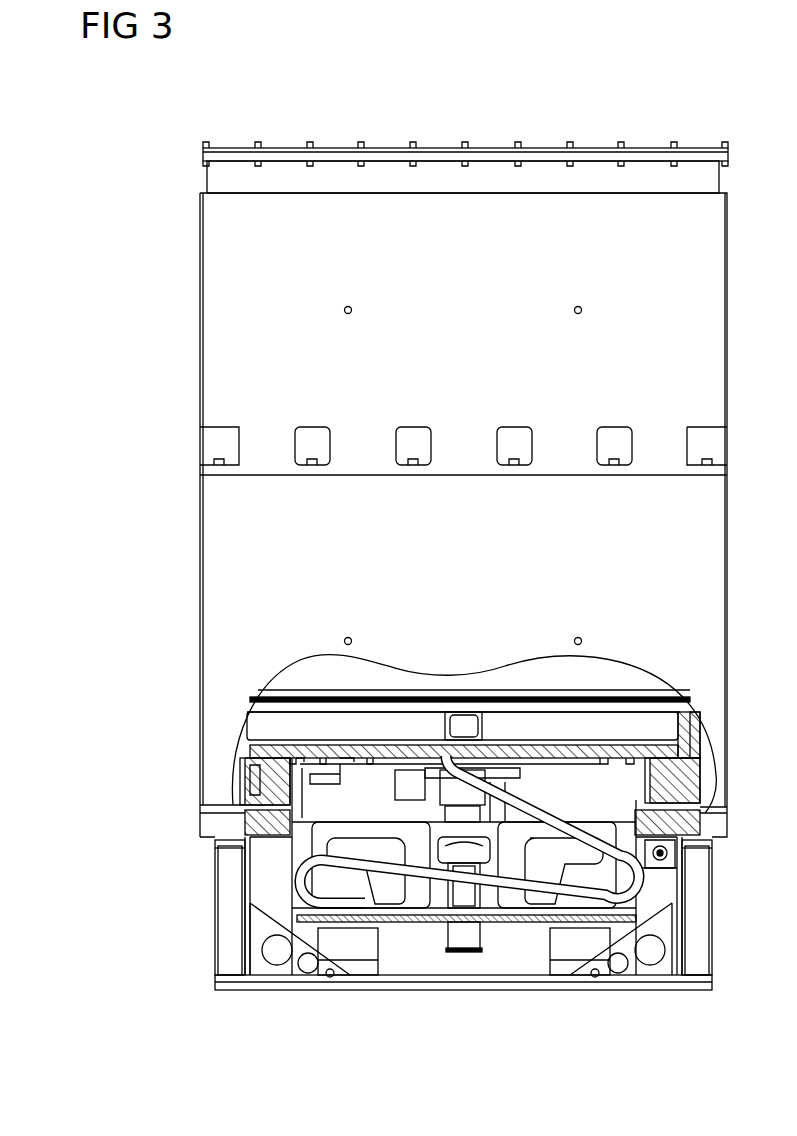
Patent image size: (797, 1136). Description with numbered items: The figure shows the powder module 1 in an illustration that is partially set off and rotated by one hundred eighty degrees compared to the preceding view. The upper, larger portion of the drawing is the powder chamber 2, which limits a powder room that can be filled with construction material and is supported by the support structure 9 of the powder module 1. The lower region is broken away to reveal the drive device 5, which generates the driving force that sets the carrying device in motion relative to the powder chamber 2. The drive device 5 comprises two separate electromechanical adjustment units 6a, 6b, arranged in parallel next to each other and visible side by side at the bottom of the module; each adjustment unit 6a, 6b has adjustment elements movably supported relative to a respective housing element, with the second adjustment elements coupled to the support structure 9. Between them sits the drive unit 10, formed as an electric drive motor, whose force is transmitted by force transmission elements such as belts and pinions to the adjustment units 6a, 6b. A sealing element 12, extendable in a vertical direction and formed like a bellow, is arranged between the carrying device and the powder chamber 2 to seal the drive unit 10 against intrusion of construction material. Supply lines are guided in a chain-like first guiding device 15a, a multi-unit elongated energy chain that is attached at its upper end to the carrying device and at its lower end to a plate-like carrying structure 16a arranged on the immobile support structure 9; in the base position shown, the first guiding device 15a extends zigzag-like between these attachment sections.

The powder module 1 is at (608, 96).
The powder chamber 2 is at (152, 362).
The drive device 5 is at (487, 1003).
The adjustment unit 6a is at (367, 985).
The adjustment unit 6b is at (555, 985).
The support structure 9 is at (230, 888).
The drive unit 10 is at (465, 962).
The sealing element 12 is at (247, 778).
The first guiding device 15a is at (618, 889).
The carrying structure 16a is at (342, 922).